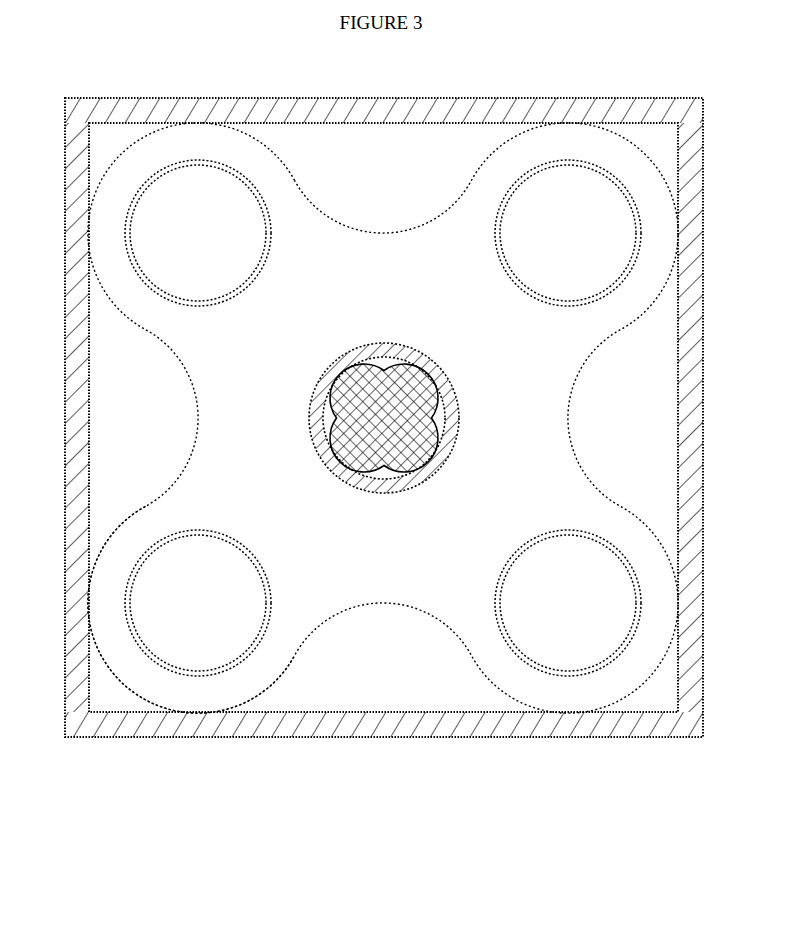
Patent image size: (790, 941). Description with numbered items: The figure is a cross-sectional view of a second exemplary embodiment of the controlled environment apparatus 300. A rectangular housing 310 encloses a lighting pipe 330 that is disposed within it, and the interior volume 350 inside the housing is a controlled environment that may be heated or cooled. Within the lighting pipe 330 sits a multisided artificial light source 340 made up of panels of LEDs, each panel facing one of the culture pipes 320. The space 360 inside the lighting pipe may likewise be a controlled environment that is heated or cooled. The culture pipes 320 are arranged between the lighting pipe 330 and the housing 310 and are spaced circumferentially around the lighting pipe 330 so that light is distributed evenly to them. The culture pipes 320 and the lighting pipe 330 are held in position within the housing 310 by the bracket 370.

The controlled environment apparatus 300 is at (142, 775).
The housing 310 is at (465, 737).
The culture pipes 320 is at (235, 170).
The lighting pipe 330 is at (322, 383).
The artificial light source 340 is at (440, 433).
The interior volume 350 is at (345, 683).
The space 360 is at (333, 415).
The bracket 370 is at (178, 695).